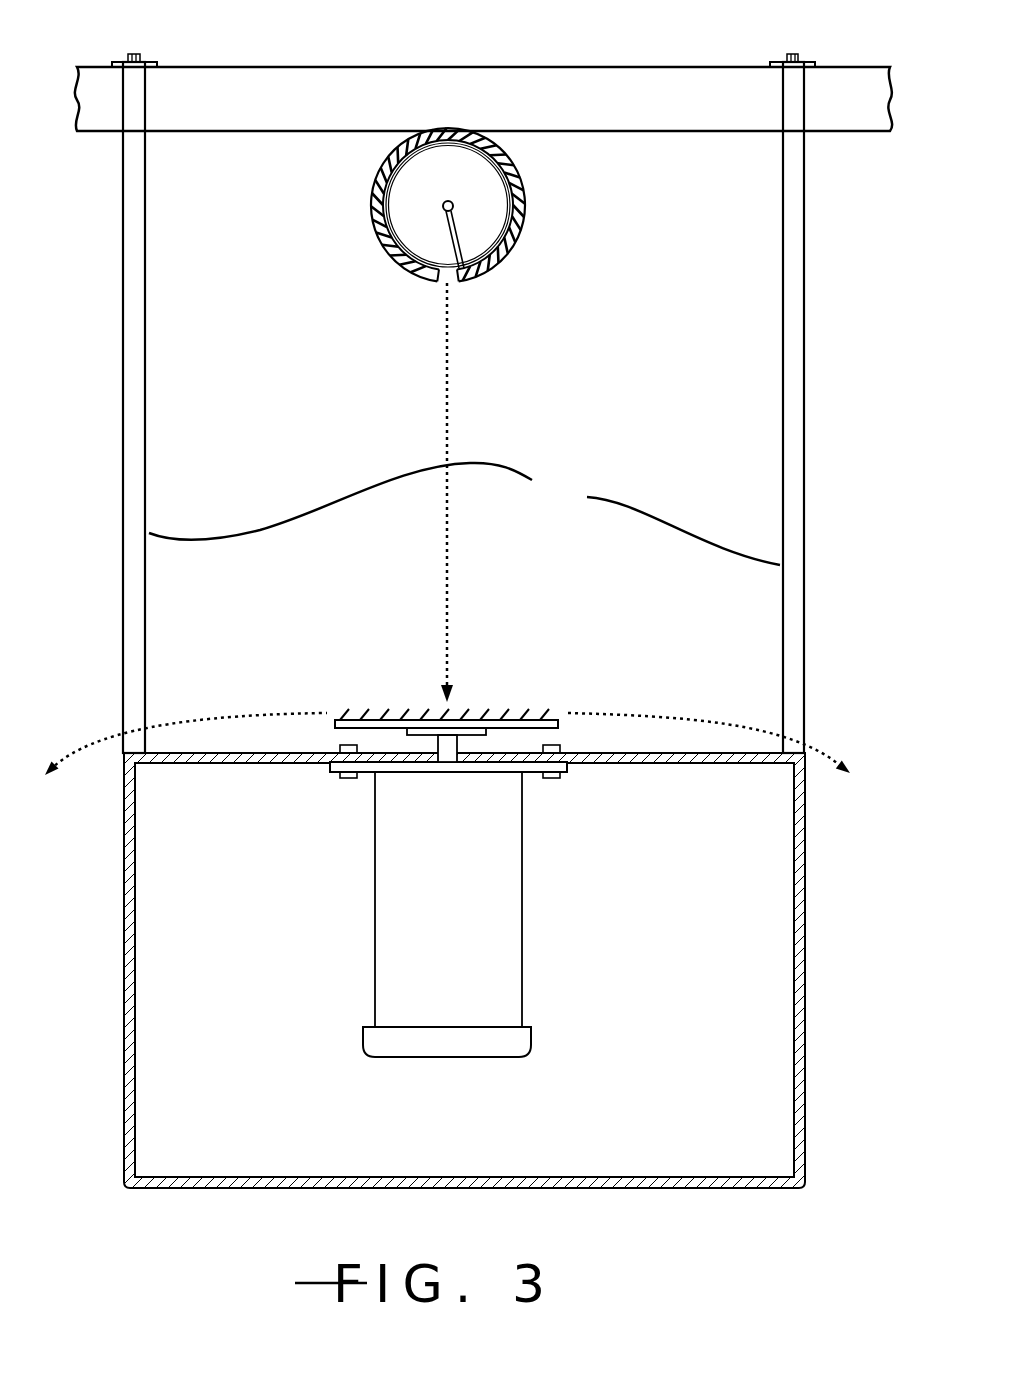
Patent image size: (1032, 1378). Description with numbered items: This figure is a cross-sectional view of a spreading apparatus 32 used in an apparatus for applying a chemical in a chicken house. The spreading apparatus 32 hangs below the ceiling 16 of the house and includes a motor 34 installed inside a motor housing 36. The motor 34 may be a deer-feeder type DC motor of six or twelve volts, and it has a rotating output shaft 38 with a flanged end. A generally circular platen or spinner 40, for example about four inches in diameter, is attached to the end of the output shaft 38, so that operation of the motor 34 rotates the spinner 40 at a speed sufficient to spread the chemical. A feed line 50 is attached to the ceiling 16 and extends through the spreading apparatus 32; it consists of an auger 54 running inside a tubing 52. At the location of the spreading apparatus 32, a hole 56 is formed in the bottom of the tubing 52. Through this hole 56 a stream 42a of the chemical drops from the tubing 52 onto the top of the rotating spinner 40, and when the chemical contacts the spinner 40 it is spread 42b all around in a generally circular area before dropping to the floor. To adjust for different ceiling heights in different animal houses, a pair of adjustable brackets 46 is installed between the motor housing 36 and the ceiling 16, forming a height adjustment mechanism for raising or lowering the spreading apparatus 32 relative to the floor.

The ceiling 16 is at (607, 82).
The spreading apparatus 32 is at (836, 422).
The motor 34 is at (522, 885).
The motor housing 36 is at (643, 1188).
The output shaft 38 is at (446, 742).
The spinner 40 is at (475, 720).
The stream of the chemical 42a is at (447, 413).
The spread of the chemical 42b is at (707, 718).
The adjustable brackets 46 is at (464, 514).
The feed line 50 is at (551, 245).
The tubing 52 is at (522, 226).
The auger 54 is at (470, 223).
The hole 56 is at (443, 287).